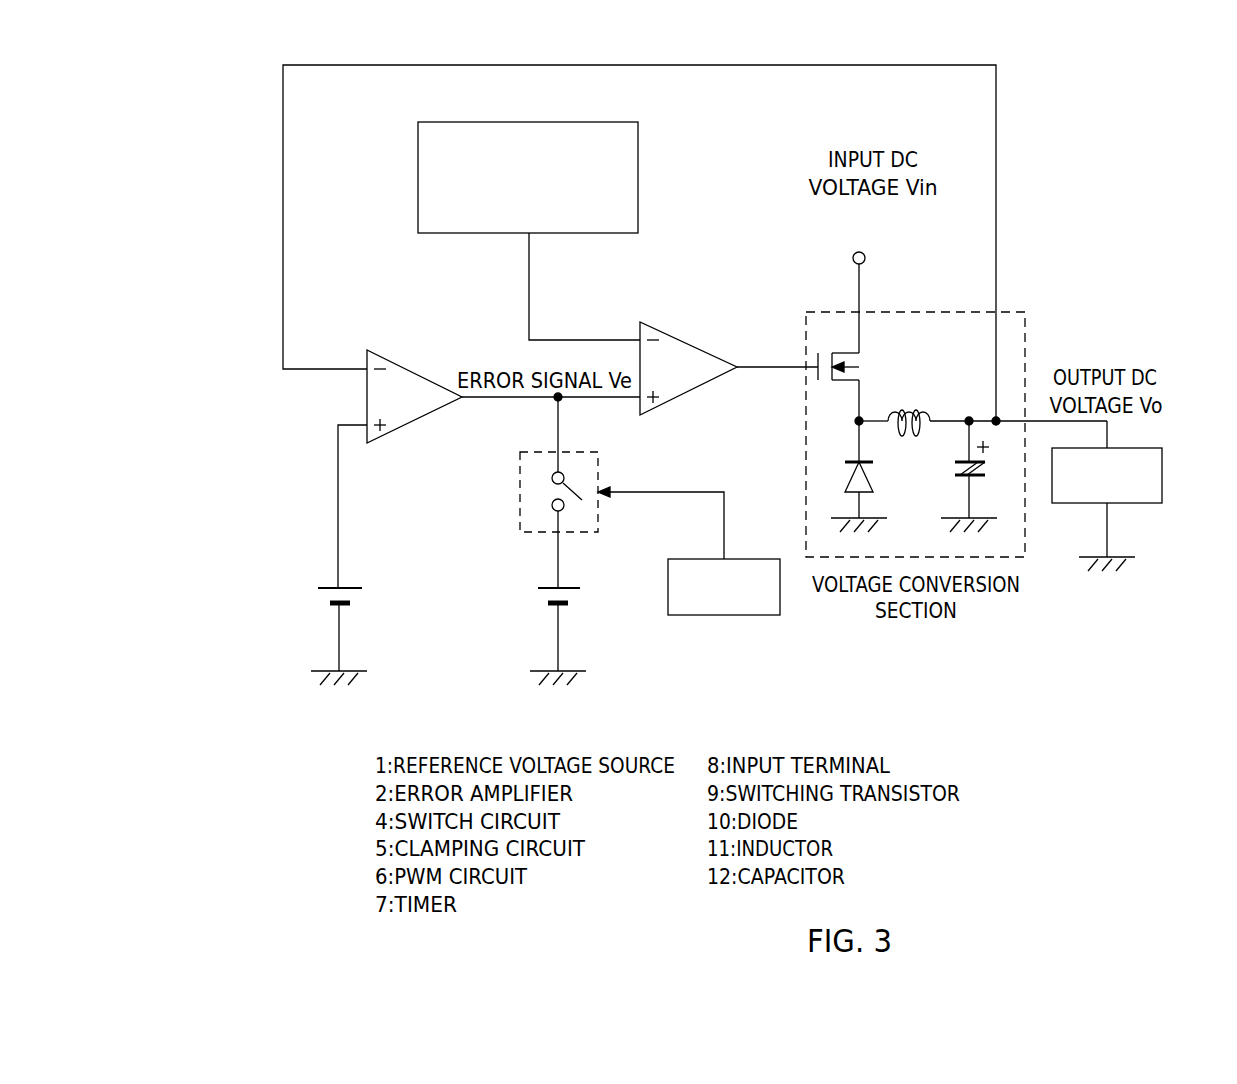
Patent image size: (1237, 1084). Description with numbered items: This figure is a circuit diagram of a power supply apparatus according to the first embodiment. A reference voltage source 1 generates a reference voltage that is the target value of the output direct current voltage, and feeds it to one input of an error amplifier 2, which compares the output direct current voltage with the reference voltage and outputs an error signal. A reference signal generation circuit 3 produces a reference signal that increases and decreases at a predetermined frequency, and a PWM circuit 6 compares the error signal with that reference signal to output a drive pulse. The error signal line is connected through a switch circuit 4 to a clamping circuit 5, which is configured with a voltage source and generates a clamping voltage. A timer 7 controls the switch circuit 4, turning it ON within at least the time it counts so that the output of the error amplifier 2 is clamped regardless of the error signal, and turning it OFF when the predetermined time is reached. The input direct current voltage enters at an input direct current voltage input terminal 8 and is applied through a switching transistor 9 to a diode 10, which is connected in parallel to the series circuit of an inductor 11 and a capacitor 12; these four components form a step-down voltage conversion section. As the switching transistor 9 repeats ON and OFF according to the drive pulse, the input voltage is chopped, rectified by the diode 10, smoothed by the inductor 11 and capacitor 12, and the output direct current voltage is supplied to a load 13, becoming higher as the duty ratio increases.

The reference voltage source 1 is at (316, 588).
The error amplifier 2 is at (405, 368).
The reference signal generation circuit 3 is at (558, 122).
The switch circuit 4 is at (518, 496).
The clamping circuit 5 is at (546, 603).
The PWM circuit 6 is at (693, 340).
The timer 7 is at (756, 559).
The input direct current voltage input terminal 8 is at (863, 253).
The switching transistor 9 is at (862, 362).
The diode 10 is at (866, 476).
The inductor 11 is at (928, 419).
The capacitor 12 is at (953, 476).
The load 13 is at (1140, 448).